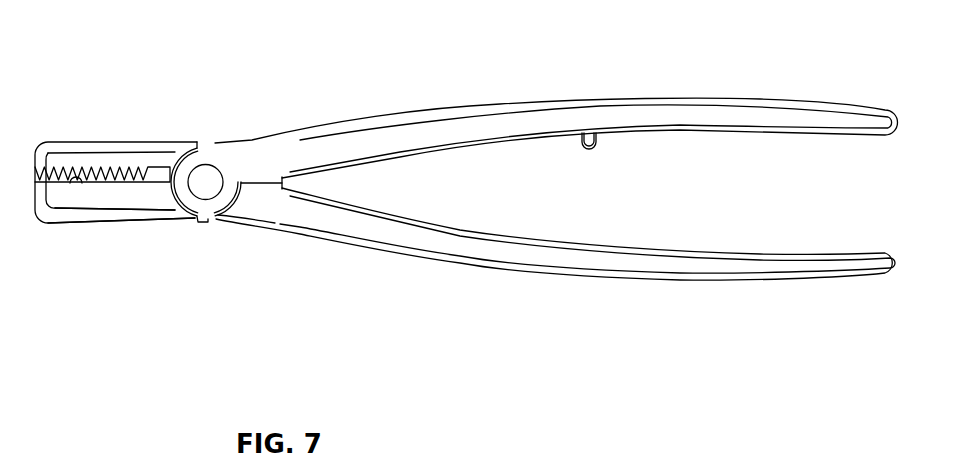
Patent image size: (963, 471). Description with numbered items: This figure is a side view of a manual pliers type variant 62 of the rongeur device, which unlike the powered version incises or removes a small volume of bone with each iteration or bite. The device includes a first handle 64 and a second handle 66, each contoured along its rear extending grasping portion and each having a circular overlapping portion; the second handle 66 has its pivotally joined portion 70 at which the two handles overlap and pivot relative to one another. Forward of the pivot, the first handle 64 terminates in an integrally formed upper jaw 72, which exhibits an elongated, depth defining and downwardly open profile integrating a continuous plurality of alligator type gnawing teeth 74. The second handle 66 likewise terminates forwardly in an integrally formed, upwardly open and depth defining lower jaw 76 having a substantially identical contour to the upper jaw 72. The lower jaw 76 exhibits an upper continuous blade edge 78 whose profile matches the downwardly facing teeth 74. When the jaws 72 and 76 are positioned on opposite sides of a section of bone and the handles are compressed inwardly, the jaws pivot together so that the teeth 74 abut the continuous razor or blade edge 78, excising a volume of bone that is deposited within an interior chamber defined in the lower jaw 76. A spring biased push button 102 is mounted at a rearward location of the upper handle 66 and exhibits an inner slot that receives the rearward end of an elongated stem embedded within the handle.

The manual pliers type variant 62 is at (249, 72).
The first handle 64 is at (427, 258).
The second handle 66 is at (437, 126).
The pivotally joined portion 70 is at (204, 172).
The upper jaw 72 is at (118, 142).
The alligator type gnawing teeth 74 is at (58, 181).
The lower jaw 76 is at (108, 218).
The upper continuous blade edge 78 is at (75, 184).
The push button 102 is at (581, 147).